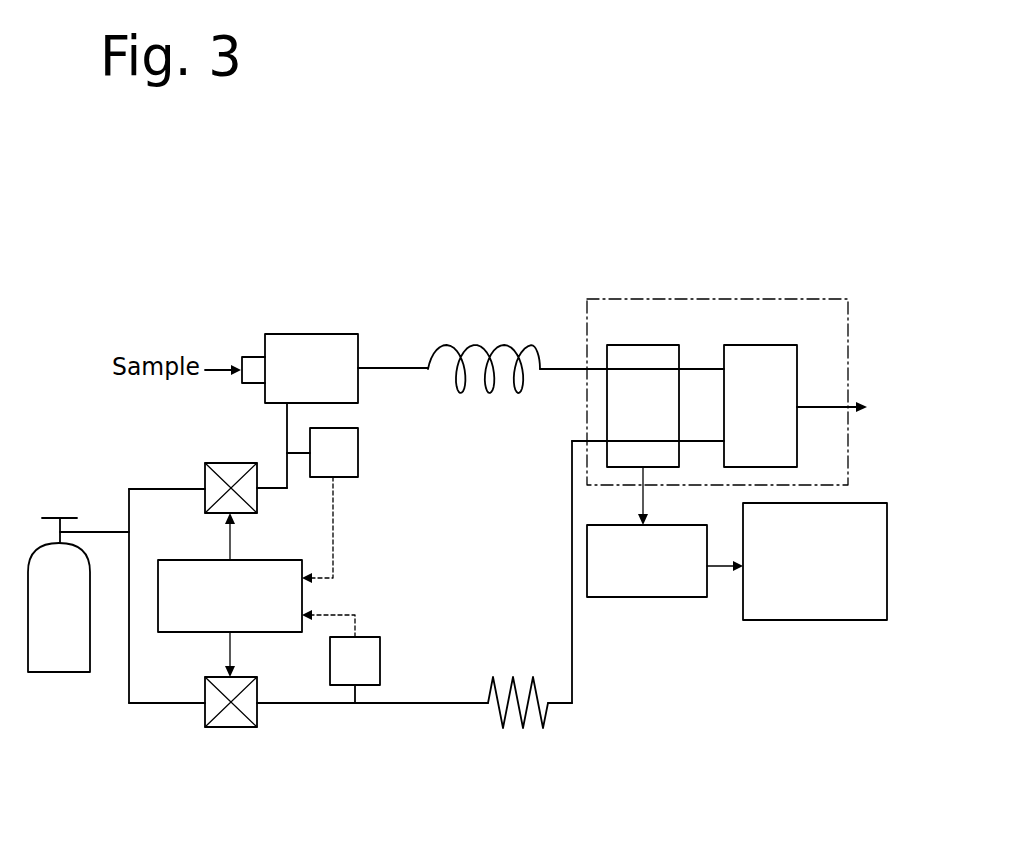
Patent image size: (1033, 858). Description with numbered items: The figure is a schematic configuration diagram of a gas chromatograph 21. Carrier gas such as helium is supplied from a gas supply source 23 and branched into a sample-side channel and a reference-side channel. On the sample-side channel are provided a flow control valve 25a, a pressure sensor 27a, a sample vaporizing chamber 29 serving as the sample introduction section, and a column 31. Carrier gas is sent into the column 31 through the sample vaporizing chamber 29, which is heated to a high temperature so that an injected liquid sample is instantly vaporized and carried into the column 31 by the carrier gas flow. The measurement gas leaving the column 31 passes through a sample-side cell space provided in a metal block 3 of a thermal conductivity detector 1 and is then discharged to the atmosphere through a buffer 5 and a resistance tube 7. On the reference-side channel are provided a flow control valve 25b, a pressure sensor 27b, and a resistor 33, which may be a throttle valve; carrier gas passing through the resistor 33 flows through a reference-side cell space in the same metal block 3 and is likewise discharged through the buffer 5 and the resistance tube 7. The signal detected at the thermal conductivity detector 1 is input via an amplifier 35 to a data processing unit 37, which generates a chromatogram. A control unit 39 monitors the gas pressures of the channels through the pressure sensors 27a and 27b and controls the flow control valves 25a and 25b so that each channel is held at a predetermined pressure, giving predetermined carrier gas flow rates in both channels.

The thermal conductivity detector 1 is at (818, 299).
The metal block 3 is at (654, 345).
The buffer 5 is at (768, 345).
The resistance tube 7 is at (822, 405).
The gas chromatograph 21 is at (357, 268).
The gas supply source 23 is at (60, 673).
The flow control valve 25a is at (220, 462).
The flow control valve 25b is at (223, 730).
The pressure sensor 27a is at (362, 449).
The pressure sensor 27b is at (383, 655).
The sample vaporizing chamber 29 is at (292, 333).
The column 31 is at (497, 340).
The resistor 33 is at (528, 728).
The amplifier 35 is at (647, 598).
The data processing unit 37 is at (780, 620).
The control unit 39 is at (278, 560).